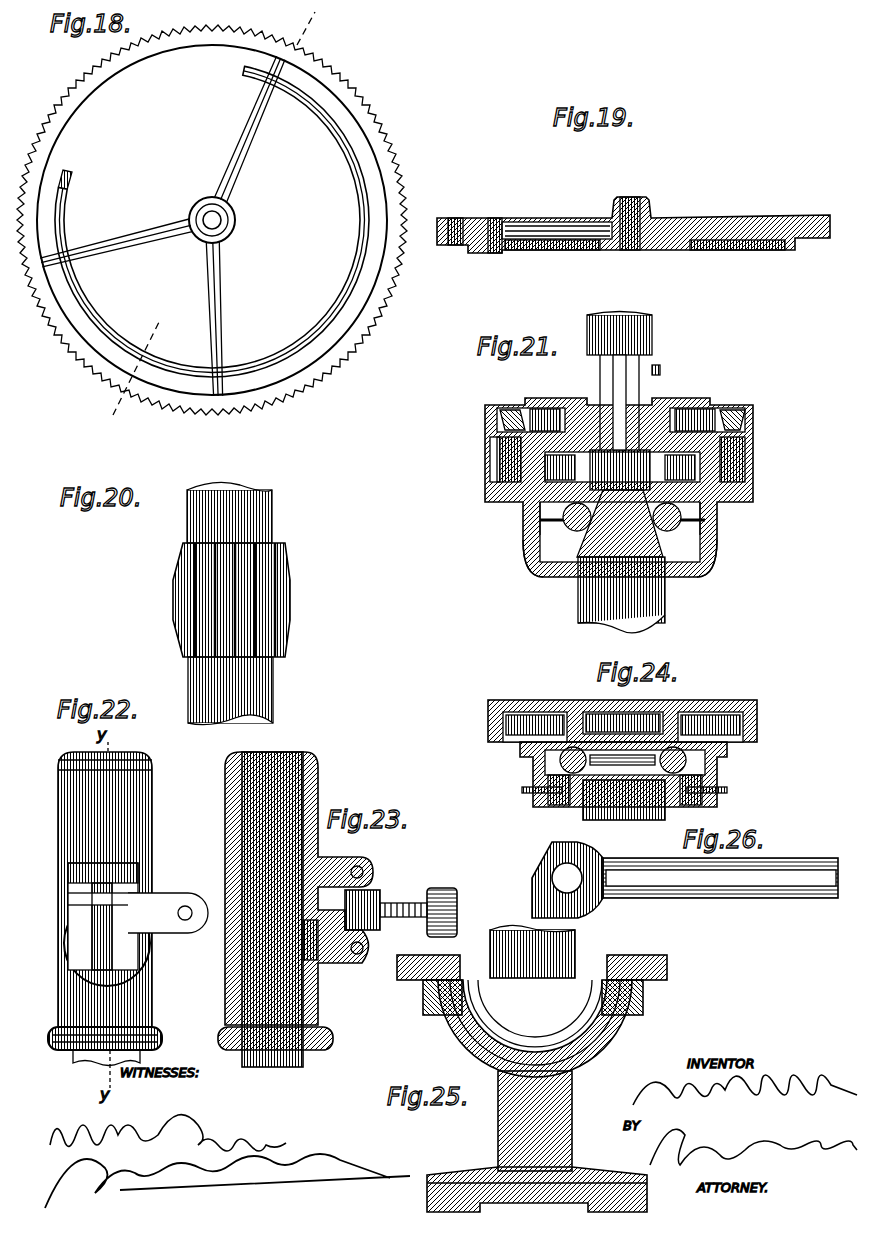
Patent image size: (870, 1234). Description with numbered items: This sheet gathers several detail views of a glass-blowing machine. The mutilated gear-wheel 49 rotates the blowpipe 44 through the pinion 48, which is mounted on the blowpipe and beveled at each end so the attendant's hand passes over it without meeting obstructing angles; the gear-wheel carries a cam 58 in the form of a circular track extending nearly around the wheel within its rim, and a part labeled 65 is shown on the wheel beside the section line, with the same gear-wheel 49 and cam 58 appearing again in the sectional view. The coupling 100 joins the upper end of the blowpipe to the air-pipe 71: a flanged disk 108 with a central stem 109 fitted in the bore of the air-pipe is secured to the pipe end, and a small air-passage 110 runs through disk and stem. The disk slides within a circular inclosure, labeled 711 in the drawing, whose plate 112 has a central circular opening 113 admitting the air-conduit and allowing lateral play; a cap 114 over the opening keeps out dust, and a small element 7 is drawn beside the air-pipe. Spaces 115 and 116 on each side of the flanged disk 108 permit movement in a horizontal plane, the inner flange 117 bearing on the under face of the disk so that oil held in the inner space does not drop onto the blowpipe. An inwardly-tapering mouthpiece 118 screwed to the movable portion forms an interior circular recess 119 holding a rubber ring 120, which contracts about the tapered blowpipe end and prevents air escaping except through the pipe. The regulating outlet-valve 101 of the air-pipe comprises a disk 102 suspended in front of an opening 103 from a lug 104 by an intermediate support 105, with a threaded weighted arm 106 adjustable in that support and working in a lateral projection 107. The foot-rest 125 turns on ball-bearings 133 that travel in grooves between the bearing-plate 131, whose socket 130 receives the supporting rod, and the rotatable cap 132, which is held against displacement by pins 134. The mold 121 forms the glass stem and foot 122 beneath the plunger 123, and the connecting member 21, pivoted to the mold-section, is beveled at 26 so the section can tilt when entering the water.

In FIG. 18, the mutilated gear-wheel 49 is at (216, 220).
In FIG. 19, the mutilated gear-wheel 49 is at (712, 206).
In FIG. 18, the cam 58 is at (212, 221).
In FIG. 19, the cam 58 is at (512, 255).
In FIG. 18, the hub flange 65 is at (150, 395).
In FIG. 19, the hub flange 65 is at (440, 248).
In FIG. 20, the pinion 48 is at (290, 600).
In FIG. 21, the blowpipe 44 is at (621, 561).
In FIG. 20, the blowpipe 44 is at (230, 603).
In FIG. 21, the air-pipe 71 is at (652, 334).
In FIG. 21, the set screw 7 is at (669, 359).
In FIG. 21, the small air-passage 110 is at (618, 378).
In FIG. 21, the plate 112 is at (500, 410).
In FIG. 21, the circular opening 113 is at (545, 412).
In FIG. 21, the central stem 109 is at (640, 388).
In FIG. 21, the cap 114 is at (715, 410).
In FIG. 21, the collar 711 is at (490, 430).
In FIG. 21, the coupling 100 is at (598, 487).
In FIG. 21, the flanged disk 108 is at (732, 457).
In FIG. 21, the space 116 is at (735, 480).
In FIG. 21, the space 115 is at (545, 495).
In FIG. 21, the inner flange 117 is at (650, 472).
In FIG. 21, the rubber ring 120 is at (655, 519).
In FIG. 21, the interior circular recess 119 is at (555, 525).
In FIG. 21, the inwardly-tapering mouthpiece 118 is at (540, 568).
In FIG. 22, the lug 104 is at (130, 870).
In FIG. 23, the lug 104 is at (364, 866).
In FIG. 22, the lateral projection 107 is at (168, 913).
In FIG. 22, the intermediate support 105 is at (95, 905).
In FIG. 23, the intermediate support 105 is at (372, 893).
In FIG. 22, the disk 102 is at (140, 965).
In FIG. 23, the disk 102 is at (335, 980).
In FIG. 23, the weighted arm 106 is at (445, 879).
In FIG. 23, the regulating outlet-valve 101 is at (304, 958).
In FIG. 23, the opening 103 is at (318, 968).
In FIG. 24, the foot-rest 125 is at (520, 702).
In FIG. 24, the rotatable cap 132 is at (728, 748).
In FIG. 24, the ball-bearings 133 is at (715, 770).
In FIG. 24, the pins 134 is at (525, 790).
In FIG. 24, the bearing-plate 131 is at (583, 795).
In FIG. 24, the socket 130 is at (620, 822).
In FIG. 26, the bevel 26 is at (553, 879).
In FIG. 26, the connecting member 21 is at (738, 898).
In FIG. 25, the plunger 123 is at (562, 948).
In FIG. 25, the mold 121 is at (440, 1032).
In FIG. 25, the stem and foot 122 is at (525, 1108).